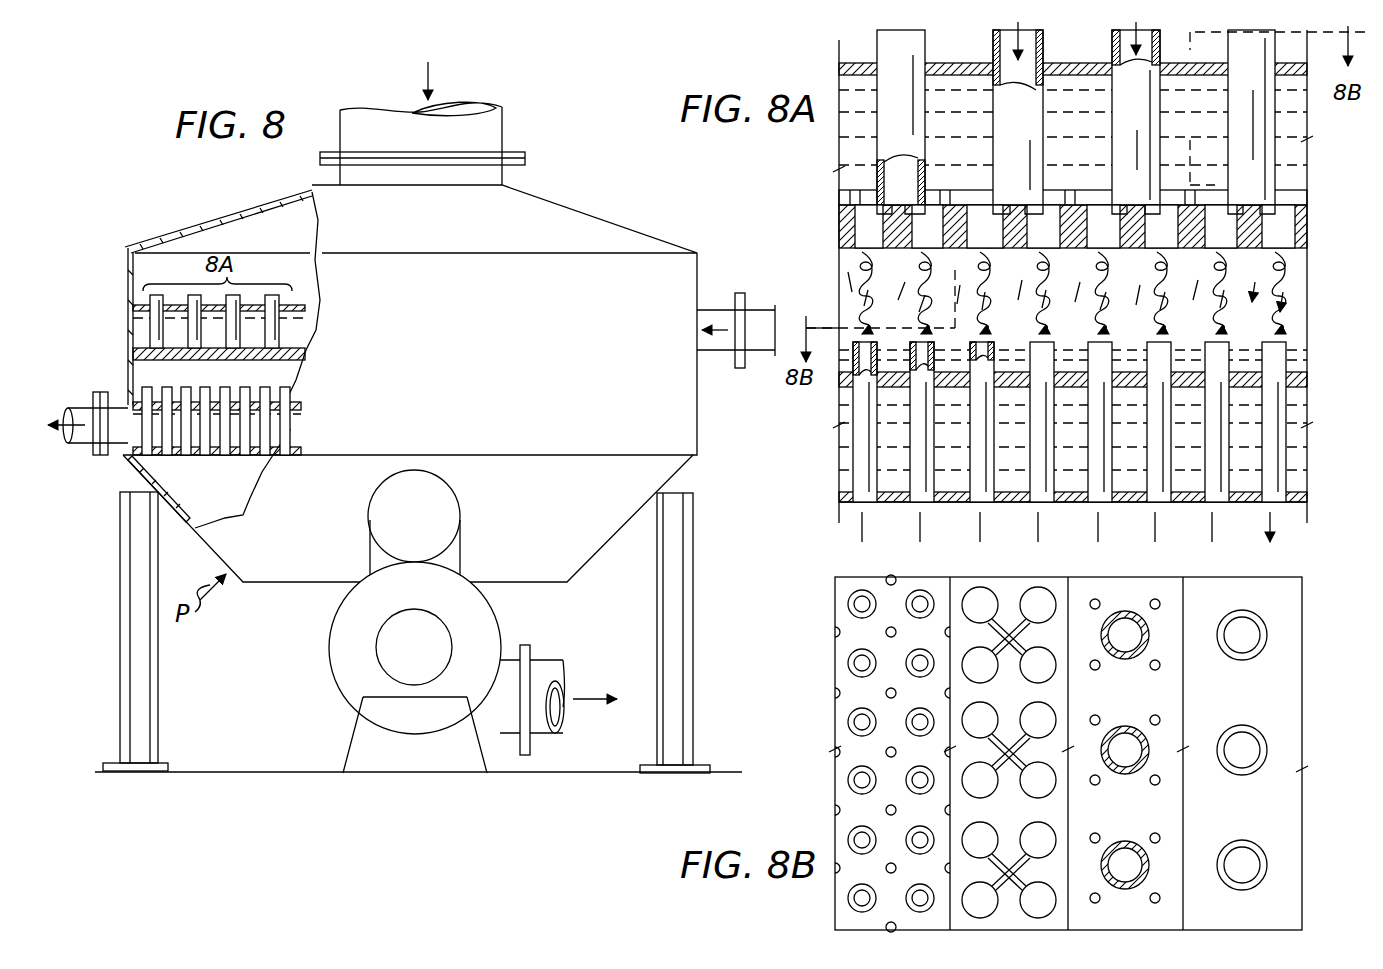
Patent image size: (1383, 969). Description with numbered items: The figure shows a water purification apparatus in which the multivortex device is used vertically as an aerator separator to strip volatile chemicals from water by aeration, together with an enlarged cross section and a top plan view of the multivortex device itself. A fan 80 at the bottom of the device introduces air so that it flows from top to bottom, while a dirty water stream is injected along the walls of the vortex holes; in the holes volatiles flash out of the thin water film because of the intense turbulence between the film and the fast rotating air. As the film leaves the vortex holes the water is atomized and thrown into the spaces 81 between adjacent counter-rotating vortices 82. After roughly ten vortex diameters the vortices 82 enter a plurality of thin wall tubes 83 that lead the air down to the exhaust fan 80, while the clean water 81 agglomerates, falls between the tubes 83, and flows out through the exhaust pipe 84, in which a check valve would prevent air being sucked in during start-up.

In FIG. 8, the fan 80 is at (330, 665).
In FIG. 8A, the spaces between adjacent counter-rotating vortices 81 is at (852, 296).
In FIG. 8A, the counter-rotating vortices 82 is at (862, 258).
In FIG. 8A, the thin wall tubes 83 is at (862, 456).
In FIG. 8, the exhaust pipe 84 is at (70, 444).